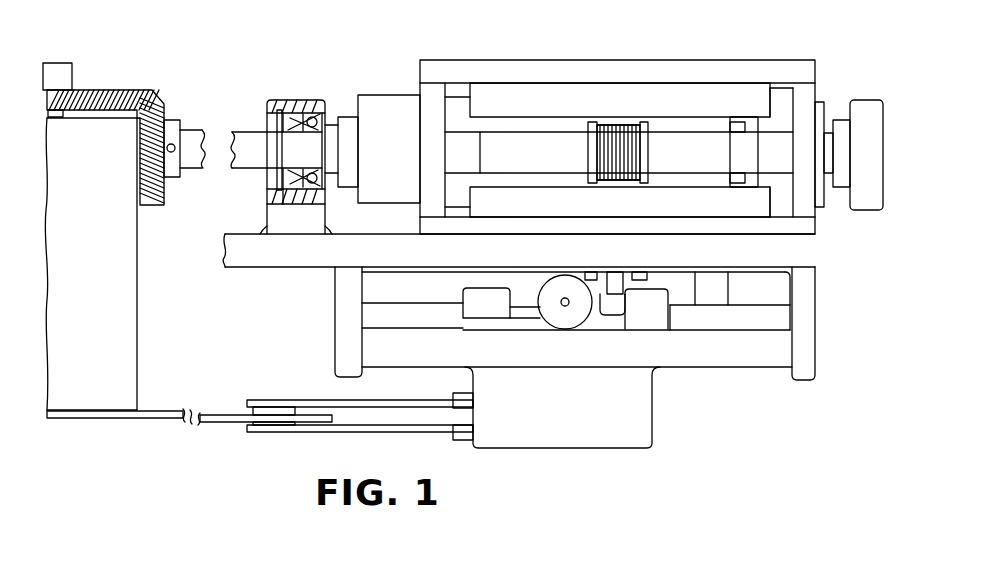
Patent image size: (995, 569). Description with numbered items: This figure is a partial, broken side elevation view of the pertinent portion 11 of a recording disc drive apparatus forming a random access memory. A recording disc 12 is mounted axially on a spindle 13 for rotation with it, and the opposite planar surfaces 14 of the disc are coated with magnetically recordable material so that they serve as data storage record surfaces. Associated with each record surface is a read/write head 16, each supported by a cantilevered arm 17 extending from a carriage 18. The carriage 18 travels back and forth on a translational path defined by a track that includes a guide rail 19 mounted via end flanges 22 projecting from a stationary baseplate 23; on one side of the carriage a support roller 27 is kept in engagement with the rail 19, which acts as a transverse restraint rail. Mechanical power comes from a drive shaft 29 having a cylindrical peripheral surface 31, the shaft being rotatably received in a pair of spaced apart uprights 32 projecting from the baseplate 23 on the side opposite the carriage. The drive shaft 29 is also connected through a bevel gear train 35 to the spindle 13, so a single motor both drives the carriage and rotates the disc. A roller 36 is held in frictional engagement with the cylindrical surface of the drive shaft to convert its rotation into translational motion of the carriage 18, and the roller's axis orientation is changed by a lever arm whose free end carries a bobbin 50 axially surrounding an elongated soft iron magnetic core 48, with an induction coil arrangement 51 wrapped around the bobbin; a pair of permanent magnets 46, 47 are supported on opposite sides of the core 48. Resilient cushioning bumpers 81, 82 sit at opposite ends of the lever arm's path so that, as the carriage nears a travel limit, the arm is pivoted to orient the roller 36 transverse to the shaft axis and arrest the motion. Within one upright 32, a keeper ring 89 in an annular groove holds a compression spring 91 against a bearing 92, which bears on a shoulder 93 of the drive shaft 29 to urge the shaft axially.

The pertinent portion of recording disc drive apparatus 11 is at (354, 81).
The recording disc 12 is at (236, 420).
The spindle 13 is at (136, 318).
The planar surface 14 is at (155, 411).
The read/write head 16 is at (275, 410).
The cantilevered arm 17 is at (392, 403).
The carriage 18 is at (583, 450).
The guide rail 19 is at (577, 319).
The end flange 22 is at (336, 326).
The baseplate 23 is at (282, 268).
The support roller 27 is at (572, 320).
The drive shaft 29 is at (194, 130).
The cylindrical peripheral surface 31 is at (372, 149).
The upright 32 is at (268, 214).
The bevel gear train 35 is at (118, 90).
The roller 36 is at (614, 281).
The permanent magnet 46 is at (711, 96).
The permanent magnet 47 is at (731, 213).
The magnetic core 48 is at (810, 95).
The bobbin 50 is at (648, 128).
The induction coil arrangement 51 is at (617, 124).
The cushioning bumper 81 is at (474, 161).
The cushioning bumper 82 is at (767, 150).
The keeper ring 89 is at (279, 112).
The compression spring 91 is at (283, 202).
The bearing 92 is at (322, 114).
The shoulder 93 is at (326, 176).